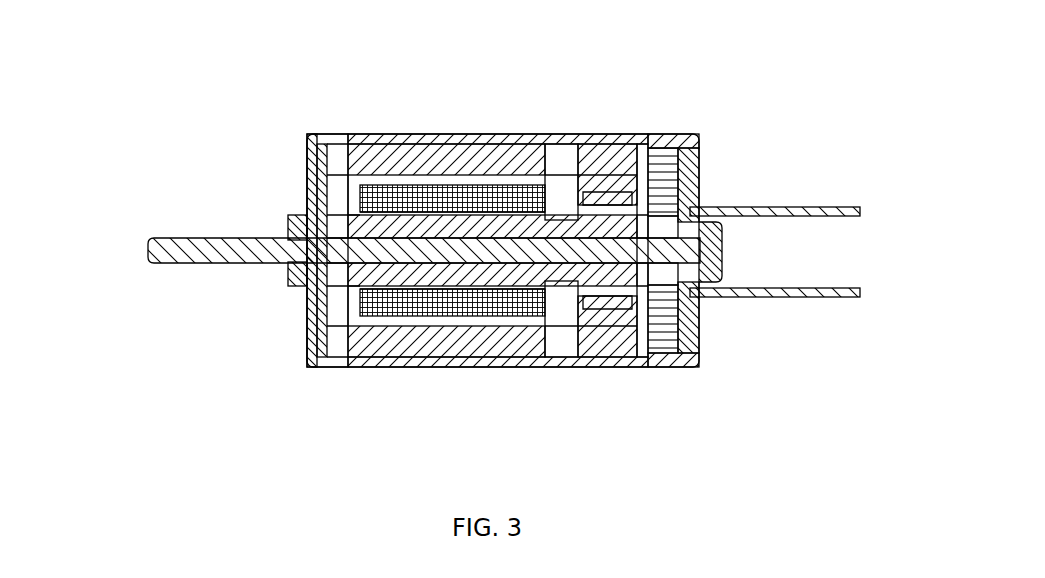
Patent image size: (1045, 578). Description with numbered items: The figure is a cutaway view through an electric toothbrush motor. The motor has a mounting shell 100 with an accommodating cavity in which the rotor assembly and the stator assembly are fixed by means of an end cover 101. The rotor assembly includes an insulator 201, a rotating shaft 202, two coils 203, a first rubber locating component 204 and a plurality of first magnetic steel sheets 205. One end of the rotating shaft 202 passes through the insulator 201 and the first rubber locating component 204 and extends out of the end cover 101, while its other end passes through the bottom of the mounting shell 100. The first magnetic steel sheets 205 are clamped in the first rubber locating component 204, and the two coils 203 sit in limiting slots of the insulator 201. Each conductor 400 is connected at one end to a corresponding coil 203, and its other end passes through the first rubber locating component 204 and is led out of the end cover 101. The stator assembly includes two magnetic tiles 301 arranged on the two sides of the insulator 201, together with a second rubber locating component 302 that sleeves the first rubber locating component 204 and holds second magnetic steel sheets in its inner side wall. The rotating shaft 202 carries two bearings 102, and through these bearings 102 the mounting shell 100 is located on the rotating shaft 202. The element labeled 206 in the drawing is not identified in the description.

The mounting shell 100 is at (490, 130).
The end cover 101 is at (698, 172).
The bearing 102 is at (292, 278).
The insulator 201 is at (383, 330).
The rotating shaft 202 is at (152, 242).
The coil 203 is at (348, 218).
The first rubber locating component 204 is at (580, 282).
The first magnetic steel sheet 205 is at (610, 310).
The bearing 206 is at (658, 340).
The magnetic tile 301 is at (396, 130).
The second rubber locating component 302 is at (618, 142).
The conductor 400 is at (812, 207).